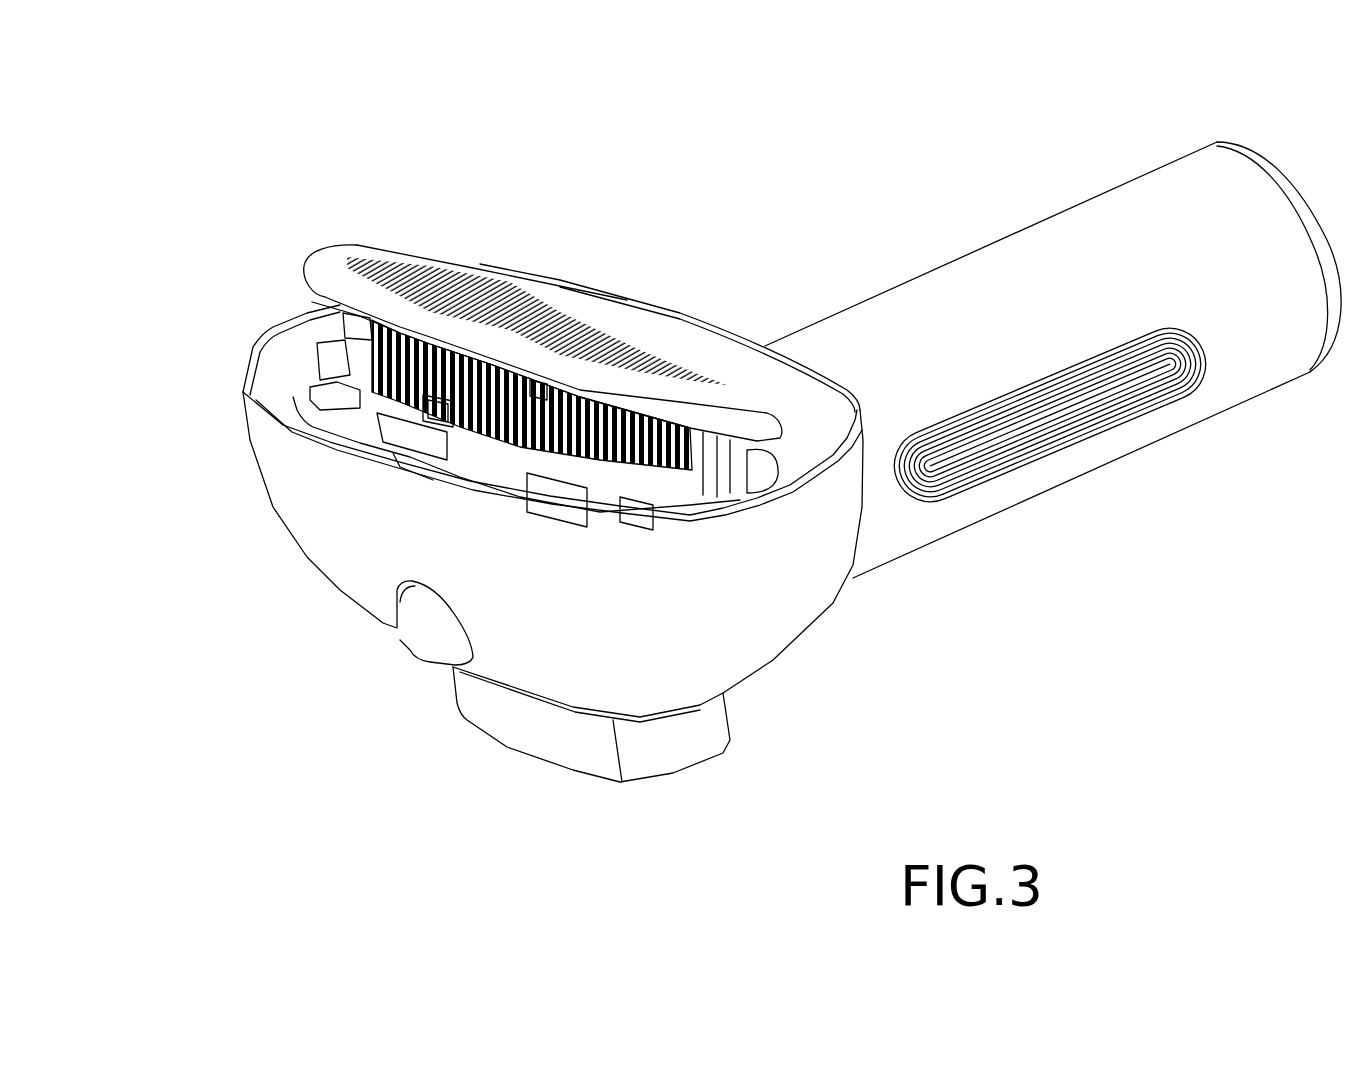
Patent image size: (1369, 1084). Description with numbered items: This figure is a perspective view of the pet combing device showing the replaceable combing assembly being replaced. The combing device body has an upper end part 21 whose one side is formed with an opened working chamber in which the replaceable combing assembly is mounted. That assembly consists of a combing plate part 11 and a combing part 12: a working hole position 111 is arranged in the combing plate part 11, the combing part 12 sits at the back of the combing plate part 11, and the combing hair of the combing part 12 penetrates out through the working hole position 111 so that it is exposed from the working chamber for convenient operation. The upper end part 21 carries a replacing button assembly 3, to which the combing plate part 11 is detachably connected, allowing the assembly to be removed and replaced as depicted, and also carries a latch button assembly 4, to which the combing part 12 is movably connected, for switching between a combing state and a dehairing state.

The combing plate part 11 is at (328, 256).
The working hole position 111 is at (460, 285).
The combing part 12 is at (360, 365).
The upper end part 21 is at (750, 580).
The replacing button assembly 3 is at (437, 623).
The latch button assembly 4 is at (557, 723).